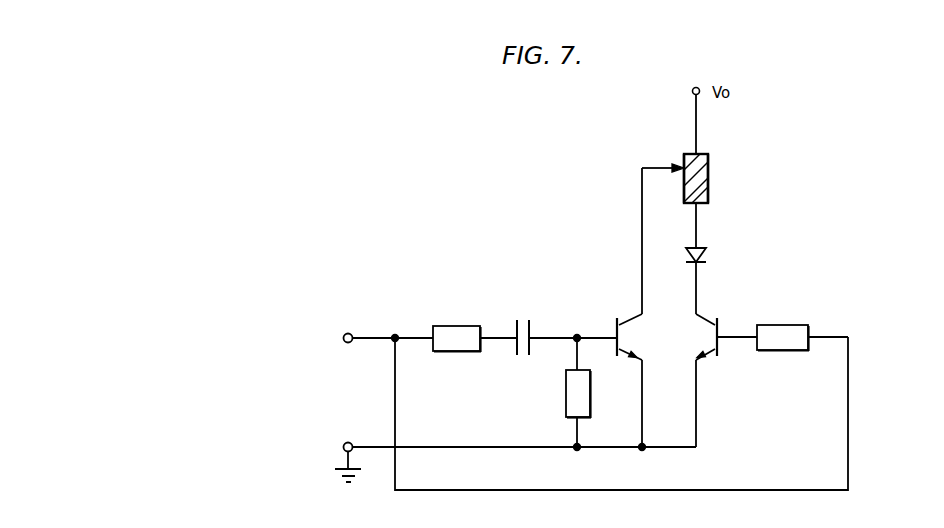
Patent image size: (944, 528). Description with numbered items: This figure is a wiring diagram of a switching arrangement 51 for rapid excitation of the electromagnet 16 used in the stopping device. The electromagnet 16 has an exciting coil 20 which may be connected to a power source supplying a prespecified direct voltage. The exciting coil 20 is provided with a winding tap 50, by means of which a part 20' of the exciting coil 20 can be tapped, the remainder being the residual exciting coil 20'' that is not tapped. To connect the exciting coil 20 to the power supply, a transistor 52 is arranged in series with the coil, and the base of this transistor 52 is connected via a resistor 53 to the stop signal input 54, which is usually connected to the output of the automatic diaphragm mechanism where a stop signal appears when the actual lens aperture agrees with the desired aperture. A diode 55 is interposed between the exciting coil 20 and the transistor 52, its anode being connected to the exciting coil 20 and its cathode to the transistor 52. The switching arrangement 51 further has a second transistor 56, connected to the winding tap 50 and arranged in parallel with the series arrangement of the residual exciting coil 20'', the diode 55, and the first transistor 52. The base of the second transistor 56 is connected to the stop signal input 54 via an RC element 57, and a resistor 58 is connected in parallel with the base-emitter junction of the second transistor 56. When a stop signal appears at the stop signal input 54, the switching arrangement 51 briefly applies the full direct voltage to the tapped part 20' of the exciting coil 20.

The electromagnet 16 is at (715, 150).
The exciting coil 20 is at (726, 178).
The part of exciting coil 20' is at (663, 153).
The residual exciting coil 20'' is at (676, 194).
The winding tap 50 is at (655, 166).
The switching arrangement 51 is at (628, 259).
The transistor 52 is at (705, 318).
The resistor 53 is at (799, 325).
The stop signal input 54 is at (345, 333).
The diode 55 is at (698, 248).
The second transistor 56 is at (631, 318).
The RC element 57 is at (513, 332).
The resistor 58 is at (565, 390).